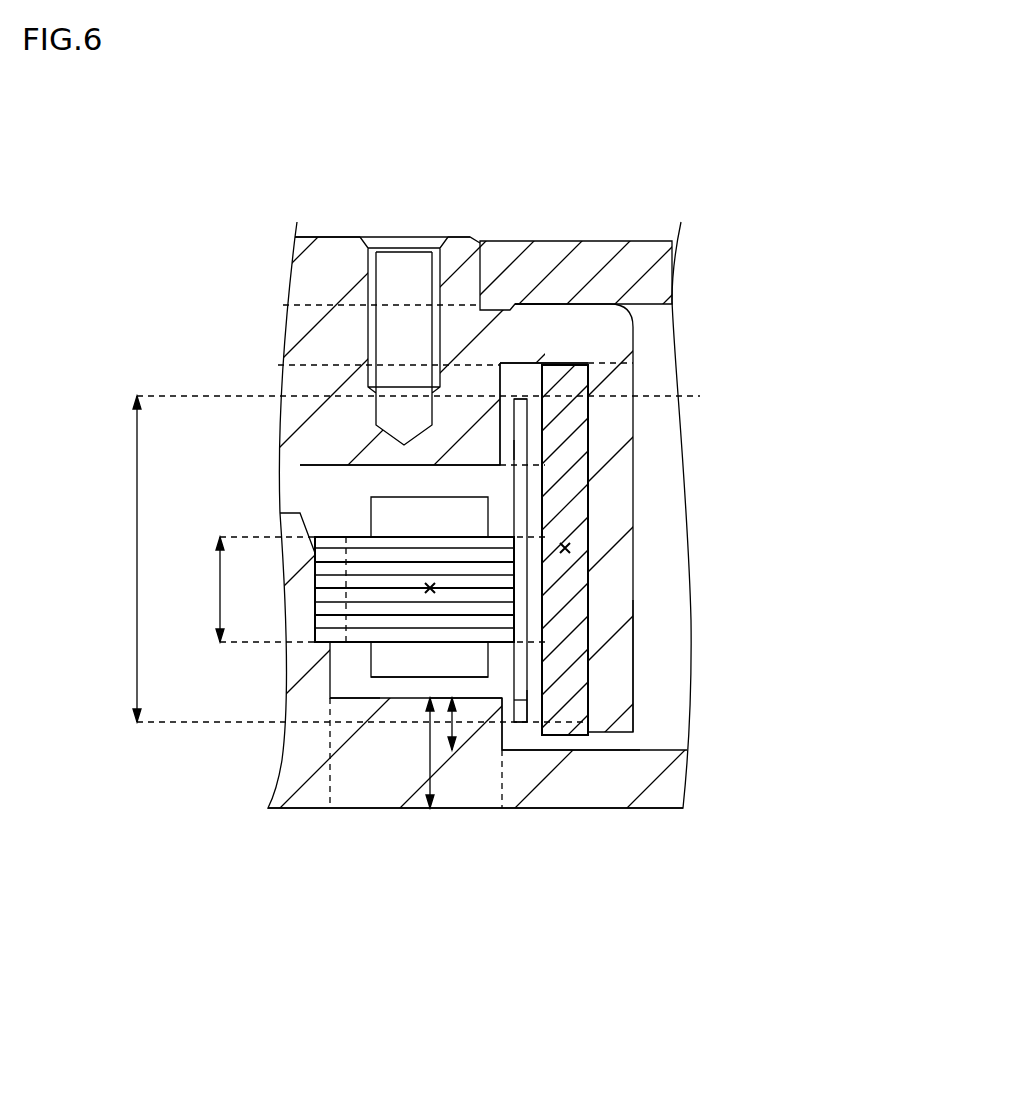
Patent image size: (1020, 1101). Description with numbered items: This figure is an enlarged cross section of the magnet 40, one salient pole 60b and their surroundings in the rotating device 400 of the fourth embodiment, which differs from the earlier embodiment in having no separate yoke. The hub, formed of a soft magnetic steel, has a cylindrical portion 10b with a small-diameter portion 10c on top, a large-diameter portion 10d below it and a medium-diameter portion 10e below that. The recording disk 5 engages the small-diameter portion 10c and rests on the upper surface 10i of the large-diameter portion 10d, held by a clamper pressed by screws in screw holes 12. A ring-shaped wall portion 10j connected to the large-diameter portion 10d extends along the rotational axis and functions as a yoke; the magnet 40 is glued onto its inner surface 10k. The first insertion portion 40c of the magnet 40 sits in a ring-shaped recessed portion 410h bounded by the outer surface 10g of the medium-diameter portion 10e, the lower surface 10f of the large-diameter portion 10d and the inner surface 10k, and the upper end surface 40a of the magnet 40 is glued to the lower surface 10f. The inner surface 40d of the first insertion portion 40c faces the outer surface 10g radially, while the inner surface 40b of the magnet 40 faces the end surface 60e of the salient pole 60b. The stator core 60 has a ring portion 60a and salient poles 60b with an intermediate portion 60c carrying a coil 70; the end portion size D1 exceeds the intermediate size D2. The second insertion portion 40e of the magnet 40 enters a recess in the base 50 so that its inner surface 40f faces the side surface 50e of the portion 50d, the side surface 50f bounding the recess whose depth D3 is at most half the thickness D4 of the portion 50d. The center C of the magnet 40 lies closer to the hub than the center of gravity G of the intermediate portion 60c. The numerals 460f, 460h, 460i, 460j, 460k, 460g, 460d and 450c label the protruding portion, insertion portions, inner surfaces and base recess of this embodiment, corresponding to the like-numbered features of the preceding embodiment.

The recording disk 5 is at (630, 292).
The cylindrical portion 10b is at (343, 300).
The small-diameter portion 10c is at (470, 295).
The large-diameter portion 10d is at (537, 320).
The medium-diameter portion 10e is at (487, 385).
The lower surface 10f is at (573, 360).
The outer surface 10g is at (503, 412).
The upper surface 10i is at (546, 372).
The ring-shaped wall portion 10j is at (615, 650).
The inner surface 10k is at (622, 683).
The screw hole 12 is at (430, 272).
The magnet 40 is at (590, 540).
The upper end surface 40a is at (580, 360).
The inner surface 40b is at (588, 630).
The first insertion portion 40c is at (548, 430).
The inner surface 40d is at (545, 458).
The second insertion portion 40e is at (598, 712).
The inner surface 40f is at (590, 734).
The ring-shaped recessed portion 410h is at (552, 395).
The plate portion 460f is at (527, 503).
The surface 460h is at (520, 447).
The surface 460i is at (513, 454).
The surface 460j is at (541, 725).
The surface 460k is at (530, 735).
The surface 460g is at (482, 700).
The surface 460d is at (478, 660).
The stator core 60 is at (347, 622).
The ring portion 60a is at (337, 645).
The salient pole 60b is at (512, 952).
The intermediate portion 60c is at (458, 645).
The end surface 60e is at (517, 624).
The coil 70 is at (388, 660).
The base 50 is at (650, 800).
The portion 50d is at (360, 700).
The side surface 50e is at (490, 700).
The side surface 50f is at (497, 700).
The surface 450c is at (600, 748).
The center C is at (568, 551).
The size D1 is at (137, 552).
The size D2 is at (217, 580).
The depth D3 is at (452, 760).
The thickness D4 is at (430, 812).
The center of gravity G is at (425, 645).
The rotating device 400 is at (478, 1056).